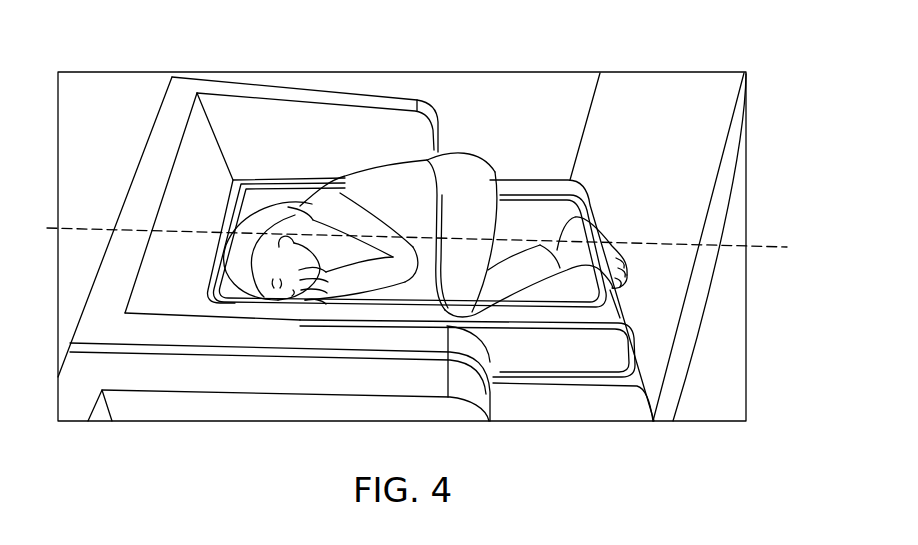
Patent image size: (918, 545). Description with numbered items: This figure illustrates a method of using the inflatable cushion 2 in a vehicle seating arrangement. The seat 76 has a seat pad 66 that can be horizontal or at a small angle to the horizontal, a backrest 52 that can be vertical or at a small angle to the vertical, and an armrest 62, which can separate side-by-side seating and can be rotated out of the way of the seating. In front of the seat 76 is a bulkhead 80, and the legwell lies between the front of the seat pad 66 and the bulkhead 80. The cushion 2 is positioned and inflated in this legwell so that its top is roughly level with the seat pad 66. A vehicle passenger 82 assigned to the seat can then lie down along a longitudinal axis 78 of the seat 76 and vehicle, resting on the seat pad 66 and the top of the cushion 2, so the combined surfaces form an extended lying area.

The seat 76 is at (156, 52).
The backrest 52 is at (187, 180).
The seat pad 66 is at (287, 193).
The passenger 82 is at (478, 205).
The longitudinal axis 78 is at (627, 243).
The armrest 62 is at (165, 333).
The cushion 2 is at (588, 378).
The bulkhead 80 is at (663, 327).